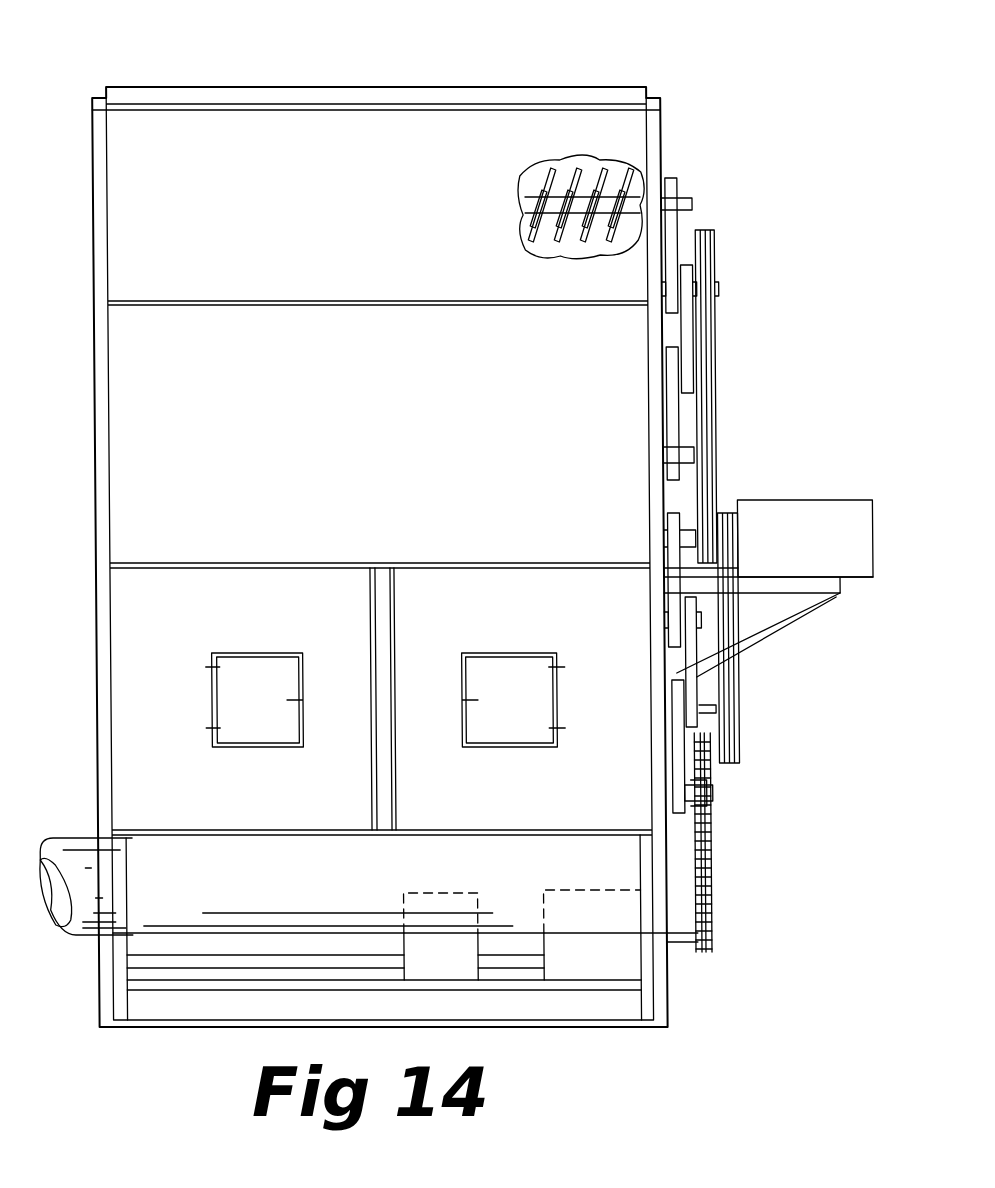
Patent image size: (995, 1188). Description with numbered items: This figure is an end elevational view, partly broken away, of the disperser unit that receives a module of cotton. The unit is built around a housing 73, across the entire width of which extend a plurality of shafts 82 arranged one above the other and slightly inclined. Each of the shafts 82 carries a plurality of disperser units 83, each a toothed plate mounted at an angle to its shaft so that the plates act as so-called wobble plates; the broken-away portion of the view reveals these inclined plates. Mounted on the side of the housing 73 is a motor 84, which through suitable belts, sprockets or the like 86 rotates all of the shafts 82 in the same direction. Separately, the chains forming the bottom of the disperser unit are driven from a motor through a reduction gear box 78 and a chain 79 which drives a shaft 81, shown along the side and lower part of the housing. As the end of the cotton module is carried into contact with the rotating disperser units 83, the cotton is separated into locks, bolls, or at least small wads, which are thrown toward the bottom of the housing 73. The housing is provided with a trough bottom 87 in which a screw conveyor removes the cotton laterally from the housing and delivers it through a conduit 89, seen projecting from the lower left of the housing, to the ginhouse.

The housing 73 is at (370, 95).
The reduction gear box 78 is at (628, 963).
The chain 79 is at (695, 860).
The shaft 81 is at (708, 792).
The shafts 82 is at (692, 203).
The disperser units 83 is at (548, 182).
The motor 84 is at (826, 505).
The belts, sprockets or the like 86 is at (700, 415).
The trough bottom 87 is at (157, 897).
The conduit 89 is at (82, 848).